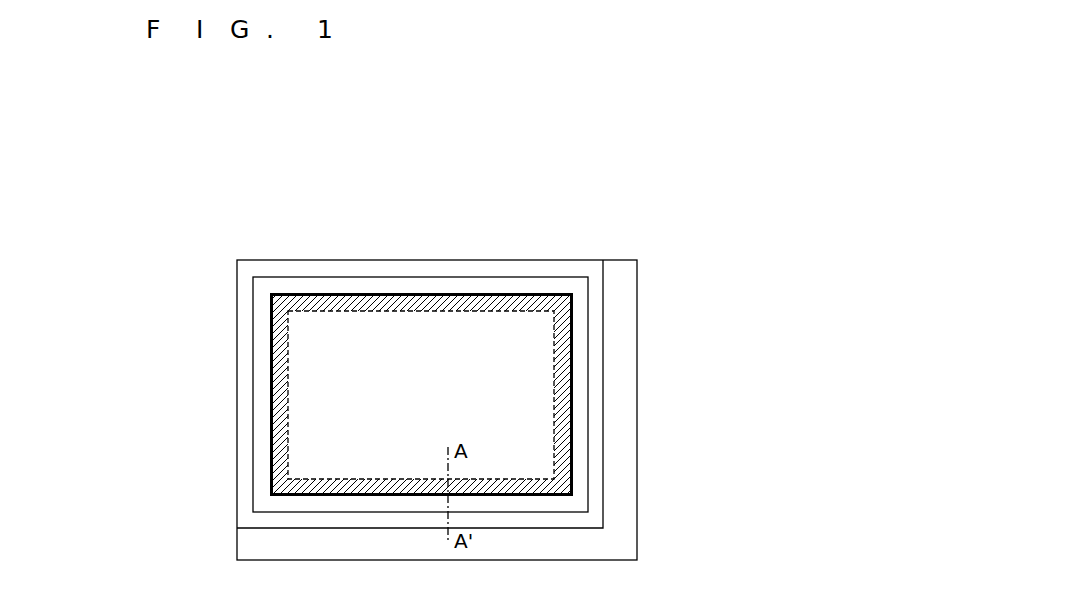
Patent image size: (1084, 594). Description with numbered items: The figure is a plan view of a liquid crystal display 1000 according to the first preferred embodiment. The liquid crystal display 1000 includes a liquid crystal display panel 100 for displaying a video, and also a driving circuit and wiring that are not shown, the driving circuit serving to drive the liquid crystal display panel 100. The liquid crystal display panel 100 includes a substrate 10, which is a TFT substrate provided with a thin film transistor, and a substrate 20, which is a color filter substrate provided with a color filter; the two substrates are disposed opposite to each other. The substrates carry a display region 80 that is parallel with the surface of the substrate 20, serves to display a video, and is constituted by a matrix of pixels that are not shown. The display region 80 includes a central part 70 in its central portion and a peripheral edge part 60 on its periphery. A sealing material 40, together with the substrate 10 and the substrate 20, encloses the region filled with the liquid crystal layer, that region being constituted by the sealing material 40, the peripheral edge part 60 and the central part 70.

The liquid crystal display 1000 is at (725, 123).
The liquid crystal display panel 100 is at (646, 251).
The substrate 10 is at (627, 328).
The substrate 20 is at (563, 268).
The sealing material 40 is at (279, 275).
The peripheral edge part 60 is at (348, 300).
The central part 70 is at (389, 352).
The display region 80 is at (475, 290).